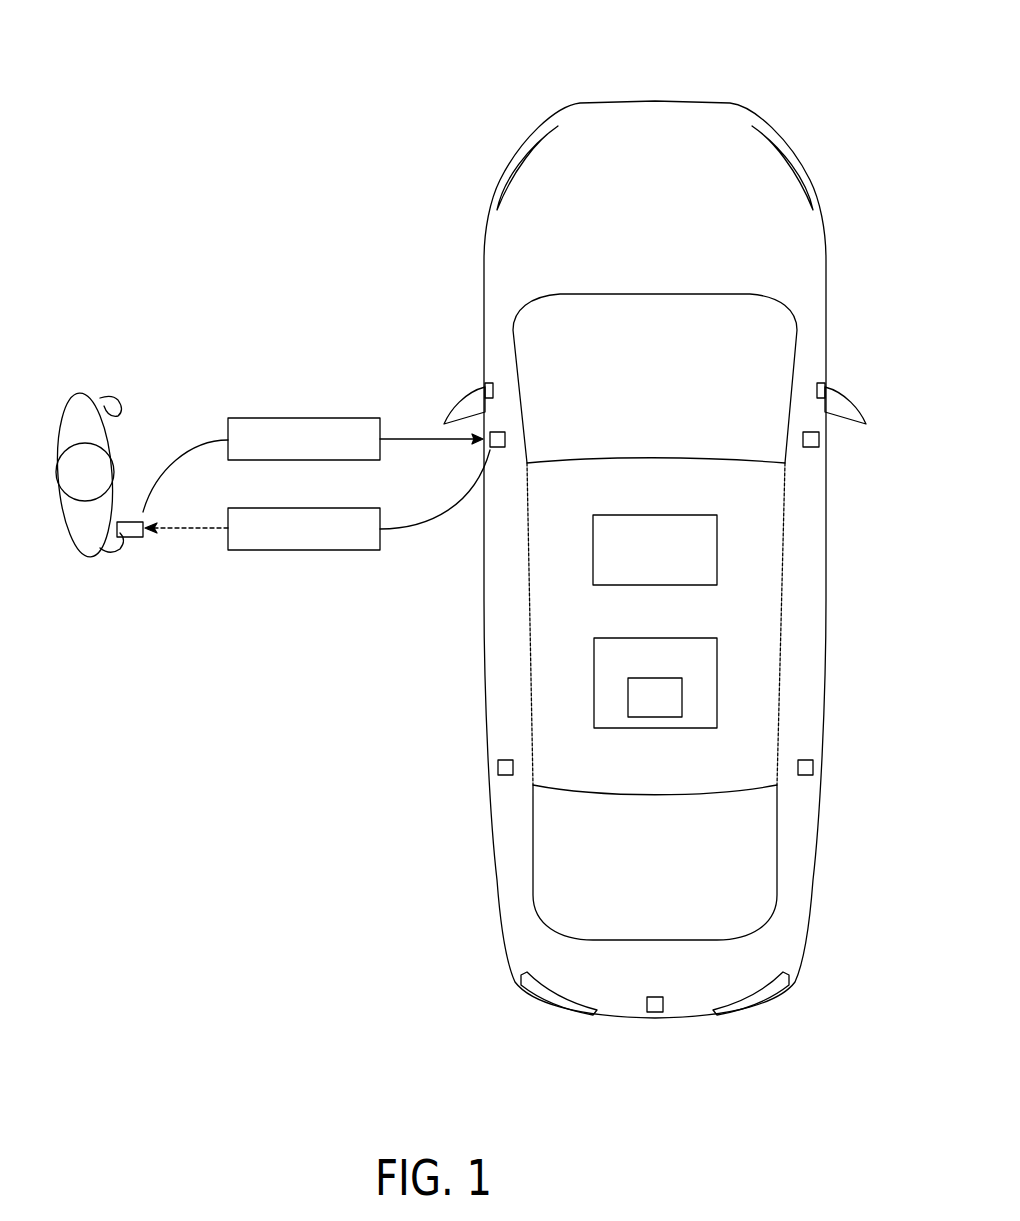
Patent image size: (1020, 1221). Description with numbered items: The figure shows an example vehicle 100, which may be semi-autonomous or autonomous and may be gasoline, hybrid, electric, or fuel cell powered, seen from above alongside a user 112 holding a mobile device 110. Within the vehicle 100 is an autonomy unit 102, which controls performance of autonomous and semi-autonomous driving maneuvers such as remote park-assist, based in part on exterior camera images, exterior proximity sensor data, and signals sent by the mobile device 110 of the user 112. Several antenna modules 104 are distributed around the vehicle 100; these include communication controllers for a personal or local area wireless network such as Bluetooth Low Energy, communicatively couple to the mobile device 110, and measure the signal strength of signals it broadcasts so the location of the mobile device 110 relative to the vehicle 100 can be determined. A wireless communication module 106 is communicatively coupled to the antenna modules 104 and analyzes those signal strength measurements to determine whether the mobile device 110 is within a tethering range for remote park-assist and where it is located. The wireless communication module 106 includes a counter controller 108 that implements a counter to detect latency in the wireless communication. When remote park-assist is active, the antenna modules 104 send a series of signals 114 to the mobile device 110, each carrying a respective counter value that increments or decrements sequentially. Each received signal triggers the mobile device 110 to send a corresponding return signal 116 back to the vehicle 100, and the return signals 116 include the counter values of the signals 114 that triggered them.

The vehicle 100 is at (690, 102).
The autonomy unit 102 is at (654, 515).
The antenna modules 104 is at (505, 440).
The wireless communication module 106 is at (655, 638).
The counter controller 108 is at (637, 706).
The mobile device 110 is at (133, 540).
The user 112 is at (85, 393).
The signals 114 is at (302, 550).
The return signals 116 is at (303, 418).